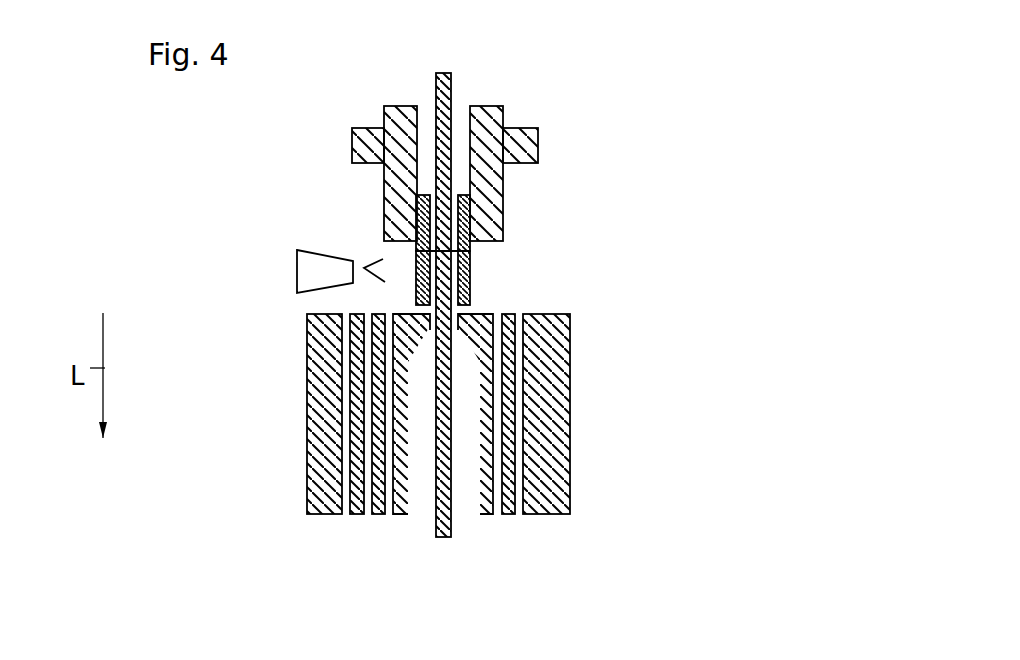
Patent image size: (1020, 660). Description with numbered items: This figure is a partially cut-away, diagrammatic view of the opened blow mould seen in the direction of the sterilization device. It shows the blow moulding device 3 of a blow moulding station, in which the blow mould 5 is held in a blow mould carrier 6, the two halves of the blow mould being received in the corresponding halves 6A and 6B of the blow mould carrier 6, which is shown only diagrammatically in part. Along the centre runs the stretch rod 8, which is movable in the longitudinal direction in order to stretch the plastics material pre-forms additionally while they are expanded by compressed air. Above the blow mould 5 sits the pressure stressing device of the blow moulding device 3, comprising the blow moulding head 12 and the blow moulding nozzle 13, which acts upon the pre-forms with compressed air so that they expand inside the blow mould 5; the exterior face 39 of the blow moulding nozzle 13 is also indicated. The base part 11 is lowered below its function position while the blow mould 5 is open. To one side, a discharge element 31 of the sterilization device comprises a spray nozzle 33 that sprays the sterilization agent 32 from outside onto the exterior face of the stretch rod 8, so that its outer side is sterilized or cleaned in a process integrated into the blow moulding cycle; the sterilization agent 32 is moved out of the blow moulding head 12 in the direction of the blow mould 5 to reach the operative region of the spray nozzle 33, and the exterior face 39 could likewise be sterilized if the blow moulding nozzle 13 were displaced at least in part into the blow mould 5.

The blow moulding device 3 is at (501, 320).
The blow moulding head 12 is at (502, 141).
The base part 11 is at (503, 185).
The blow moulding nozzle 13 is at (470, 250).
The exterior face of the blow moulding nozzle 39 is at (470, 278).
The discharge element 31 is at (297, 262).
The sterilization agent 32 is at (364, 268).
The spray nozzle 33 is at (297, 283).
The blow mould carrier 6 is at (499, 469).
The first half of the blow mould carrier 6A is at (545, 533).
The second half of the blow mould carrier 6B is at (347, 540).
The blow mould 5 is at (407, 514).
The stretch rod 8 is at (452, 525).